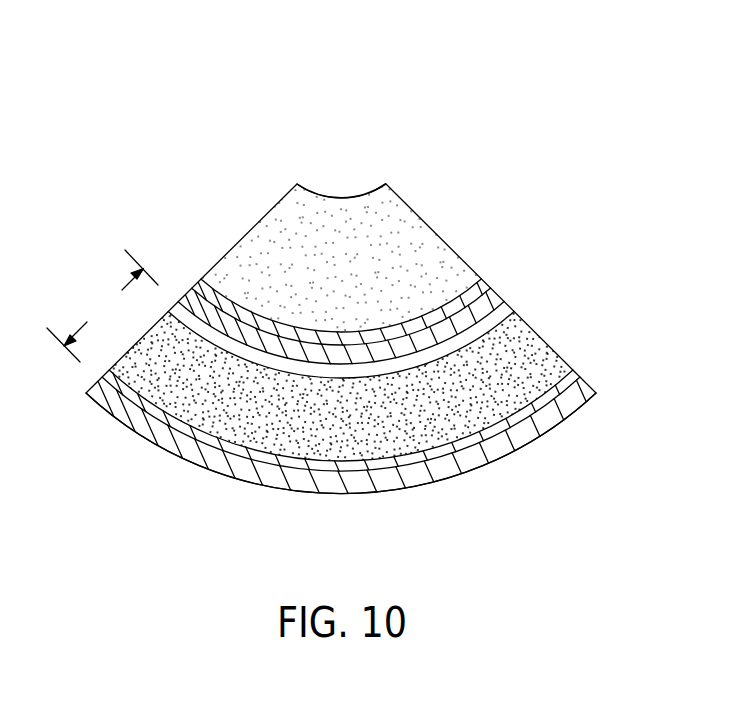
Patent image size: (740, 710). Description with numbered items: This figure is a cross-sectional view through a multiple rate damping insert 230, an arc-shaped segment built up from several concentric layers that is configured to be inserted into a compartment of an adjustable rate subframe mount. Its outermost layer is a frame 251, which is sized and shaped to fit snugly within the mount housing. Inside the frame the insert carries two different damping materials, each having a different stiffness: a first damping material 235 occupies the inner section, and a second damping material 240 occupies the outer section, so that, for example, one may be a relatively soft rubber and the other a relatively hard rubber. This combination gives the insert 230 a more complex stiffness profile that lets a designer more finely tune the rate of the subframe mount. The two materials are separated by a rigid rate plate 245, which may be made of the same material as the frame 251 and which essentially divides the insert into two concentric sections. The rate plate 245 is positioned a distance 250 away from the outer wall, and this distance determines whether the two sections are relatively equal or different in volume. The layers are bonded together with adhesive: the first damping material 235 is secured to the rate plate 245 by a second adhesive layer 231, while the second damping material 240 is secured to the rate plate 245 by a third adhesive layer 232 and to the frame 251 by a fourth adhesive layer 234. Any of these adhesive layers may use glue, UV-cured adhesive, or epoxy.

The insert 230 is at (482, 152).
The first damping material 235 is at (346, 208).
The second adhesive layer 231 is at (200, 283).
The rate plate 245 is at (490, 303).
The third adhesive layer 232 is at (507, 310).
The second damping material 240 is at (377, 445).
The fourth adhesive layer 234 is at (216, 436).
The frame 251 is at (302, 483).
The distance 250 is at (102, 306).